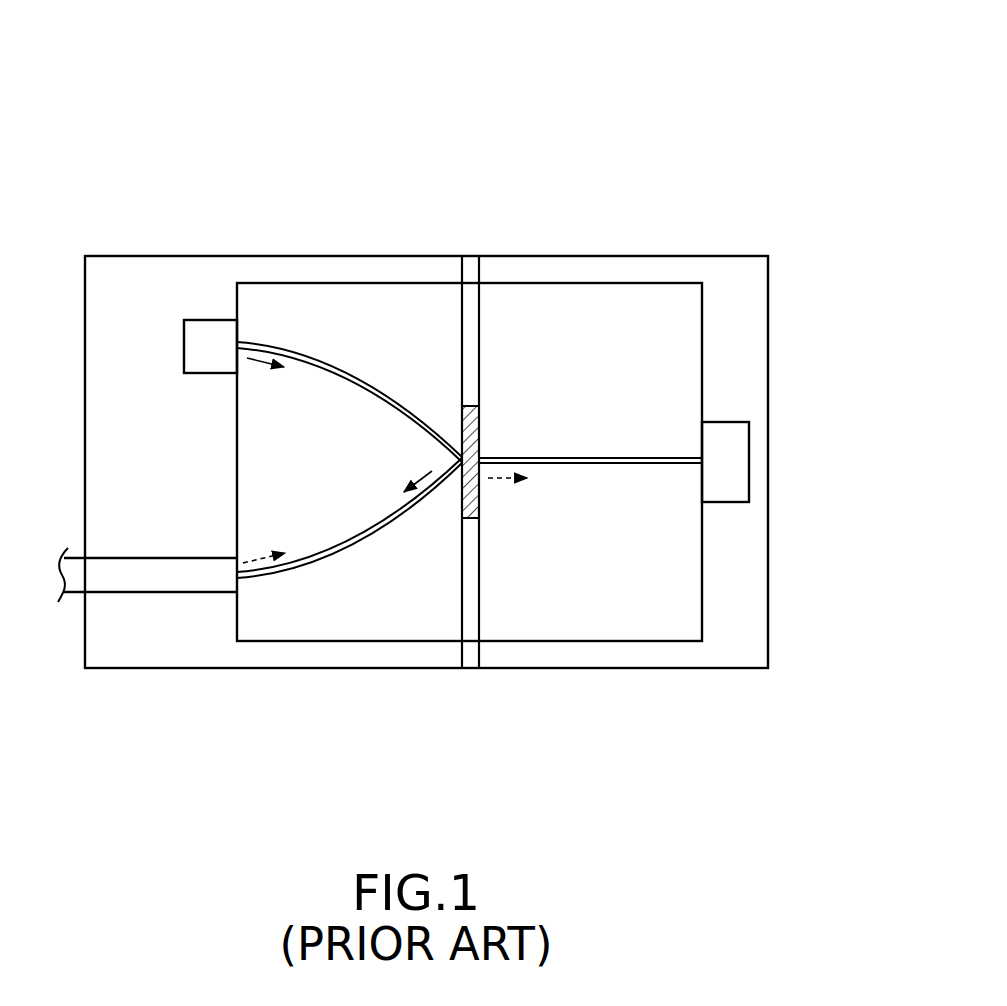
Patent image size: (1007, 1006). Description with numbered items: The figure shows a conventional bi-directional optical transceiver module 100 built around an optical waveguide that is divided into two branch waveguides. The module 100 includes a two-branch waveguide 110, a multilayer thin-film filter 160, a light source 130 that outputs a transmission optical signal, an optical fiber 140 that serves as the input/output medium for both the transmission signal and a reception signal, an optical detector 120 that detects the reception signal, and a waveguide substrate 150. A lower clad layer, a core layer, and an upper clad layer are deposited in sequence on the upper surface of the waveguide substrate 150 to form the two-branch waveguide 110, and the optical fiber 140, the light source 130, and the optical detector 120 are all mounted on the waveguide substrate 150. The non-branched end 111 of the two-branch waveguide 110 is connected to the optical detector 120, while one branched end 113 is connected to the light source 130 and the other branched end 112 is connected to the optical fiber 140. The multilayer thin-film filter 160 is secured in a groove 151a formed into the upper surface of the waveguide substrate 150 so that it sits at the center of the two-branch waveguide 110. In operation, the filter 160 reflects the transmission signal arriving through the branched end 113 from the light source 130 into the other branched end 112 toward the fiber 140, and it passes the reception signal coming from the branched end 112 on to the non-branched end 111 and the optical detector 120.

The bi-directional optical transceiver module 100 is at (565, 78).
The 2-branch waveguide 110 is at (595, 400).
The non-branched end 111 is at (601, 465).
The branched end 112 is at (362, 540).
The branched end 113 is at (298, 345).
The optical detector 120 is at (728, 463).
The light source 130 is at (212, 336).
The optical fiber 140 is at (135, 582).
The waveguide substrate 150 is at (745, 640).
The groove 151a is at (470, 272).
The multilayer thin-film filter 160 is at (463, 406).